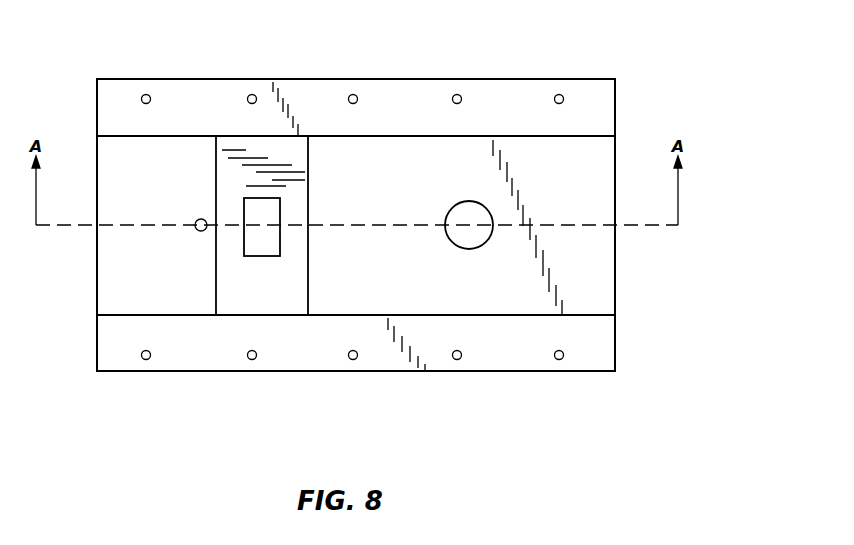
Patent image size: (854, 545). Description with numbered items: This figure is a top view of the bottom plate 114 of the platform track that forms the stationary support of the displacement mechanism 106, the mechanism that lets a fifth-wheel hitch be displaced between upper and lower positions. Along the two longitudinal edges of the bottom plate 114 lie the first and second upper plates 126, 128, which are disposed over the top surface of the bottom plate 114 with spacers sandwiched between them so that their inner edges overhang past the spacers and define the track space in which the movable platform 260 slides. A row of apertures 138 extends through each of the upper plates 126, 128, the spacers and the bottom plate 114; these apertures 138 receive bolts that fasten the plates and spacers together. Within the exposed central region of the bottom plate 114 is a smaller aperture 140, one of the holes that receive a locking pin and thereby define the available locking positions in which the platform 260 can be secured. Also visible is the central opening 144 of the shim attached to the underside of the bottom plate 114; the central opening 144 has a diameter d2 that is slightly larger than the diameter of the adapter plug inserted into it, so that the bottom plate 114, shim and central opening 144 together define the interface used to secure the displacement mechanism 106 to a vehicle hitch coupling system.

The displacement mechanism 106 is at (606, 64).
The bottom plate 114 is at (592, 271).
The first upper plate 126 is at (503, 349).
The second upper plate 128 is at (520, 106).
The apertures 138 is at (149, 96).
The apertures 140 is at (199, 232).
The central opening 144 is at (466, 235).
The platform 260 is at (275, 292).
The diameter of the central opening d2 is at (496, 194).